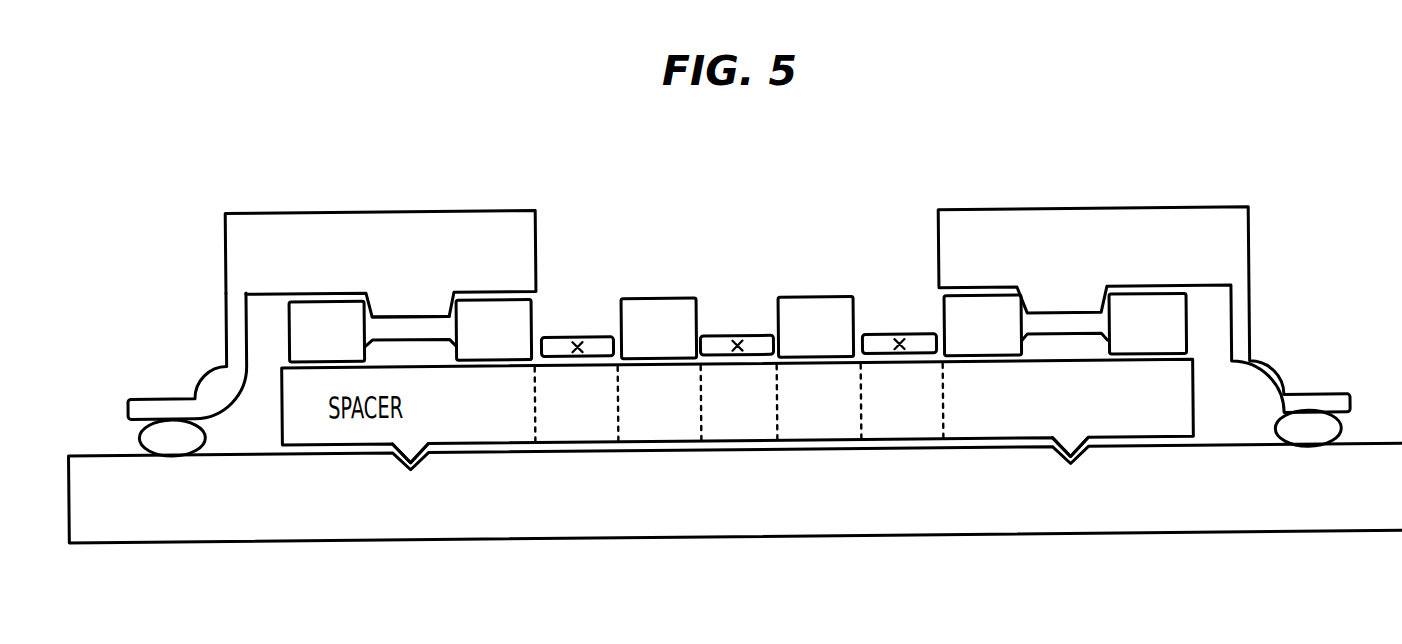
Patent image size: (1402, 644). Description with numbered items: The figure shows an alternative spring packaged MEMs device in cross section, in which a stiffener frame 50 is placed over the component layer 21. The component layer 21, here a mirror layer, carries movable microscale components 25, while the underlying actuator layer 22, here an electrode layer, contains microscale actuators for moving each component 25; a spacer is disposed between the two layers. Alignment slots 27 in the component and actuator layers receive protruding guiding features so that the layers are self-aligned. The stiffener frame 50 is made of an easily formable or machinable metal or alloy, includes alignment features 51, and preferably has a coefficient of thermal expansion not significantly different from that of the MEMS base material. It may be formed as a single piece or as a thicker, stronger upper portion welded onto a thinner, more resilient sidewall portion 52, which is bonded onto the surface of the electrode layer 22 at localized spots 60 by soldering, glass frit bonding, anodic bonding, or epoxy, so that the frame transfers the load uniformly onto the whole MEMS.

The component layer 21 is at (814, 298).
The actuator layer 22 is at (1068, 538).
The movable microscale component 25 is at (738, 336).
The alignment slot 27 is at (1067, 278).
The stiffener frame 50 is at (322, 209).
The alignment feature 51 is at (410, 314).
The sidewall portion 52 is at (221, 378).
The bonded spot 60 is at (172, 452).